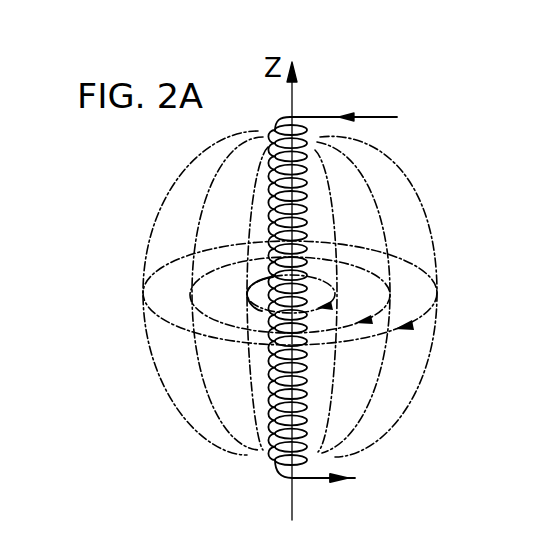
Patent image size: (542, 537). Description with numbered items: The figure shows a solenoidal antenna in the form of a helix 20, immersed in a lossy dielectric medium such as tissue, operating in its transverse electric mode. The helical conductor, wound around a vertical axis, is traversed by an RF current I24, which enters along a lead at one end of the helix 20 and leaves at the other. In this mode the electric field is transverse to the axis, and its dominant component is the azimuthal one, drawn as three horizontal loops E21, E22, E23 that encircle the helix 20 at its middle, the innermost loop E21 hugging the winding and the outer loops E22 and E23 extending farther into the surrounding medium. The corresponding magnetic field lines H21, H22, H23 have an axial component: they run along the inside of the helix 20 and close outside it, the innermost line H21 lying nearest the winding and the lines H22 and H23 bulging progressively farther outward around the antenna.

The helix 20 is at (313, 117).
The RF current I24 is at (379, 122).
The magnetic field line H21 is at (332, 213).
The magnetic field line H22 is at (230, 176).
The magnetic field line H23 is at (158, 210).
The azimuthal electric field component E21 is at (258, 316).
The azimuthal electric field component E22 is at (216, 319).
The azimuthal electric field component E23 is at (152, 303).